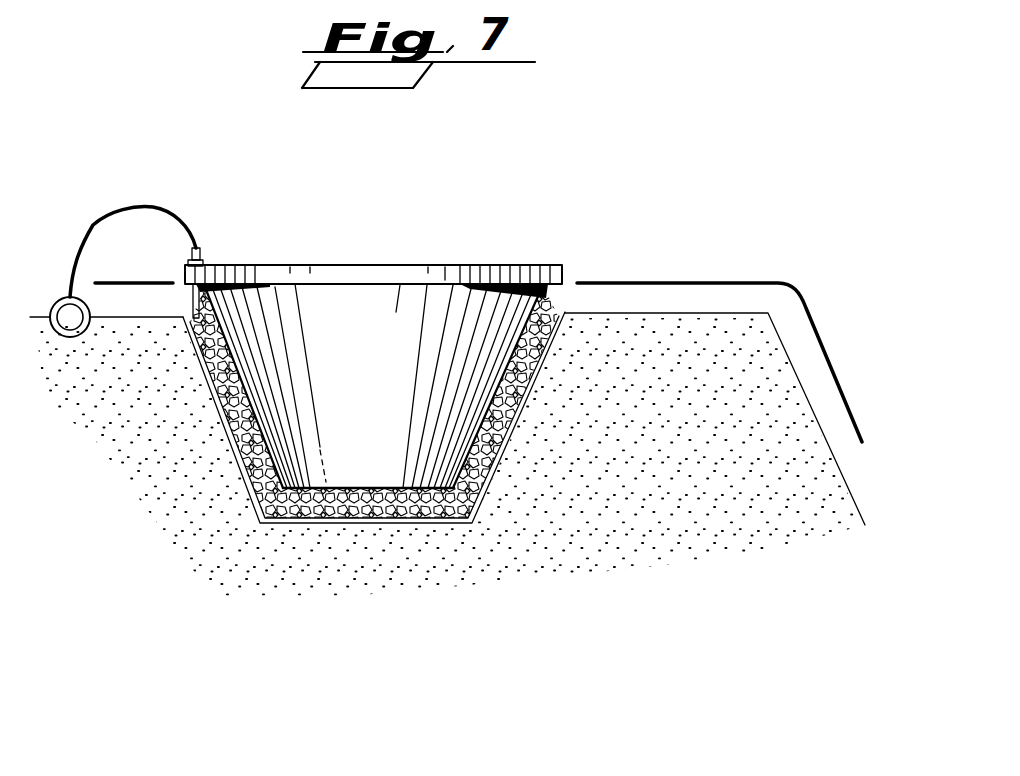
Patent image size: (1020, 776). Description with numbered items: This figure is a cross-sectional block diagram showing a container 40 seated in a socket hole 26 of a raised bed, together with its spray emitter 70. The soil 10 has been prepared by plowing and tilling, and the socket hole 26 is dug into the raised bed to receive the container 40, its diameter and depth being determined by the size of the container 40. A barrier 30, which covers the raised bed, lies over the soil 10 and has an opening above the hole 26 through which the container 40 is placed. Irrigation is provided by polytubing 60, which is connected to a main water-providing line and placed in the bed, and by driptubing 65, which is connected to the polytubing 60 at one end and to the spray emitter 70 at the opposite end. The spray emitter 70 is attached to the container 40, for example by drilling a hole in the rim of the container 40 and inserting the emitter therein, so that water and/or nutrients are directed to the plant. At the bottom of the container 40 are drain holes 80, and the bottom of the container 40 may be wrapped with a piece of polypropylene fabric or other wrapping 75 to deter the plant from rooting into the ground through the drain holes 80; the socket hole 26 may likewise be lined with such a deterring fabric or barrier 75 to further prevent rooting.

The soil 10 is at (165, 418).
The hole 26 is at (240, 473).
The barrier 30 is at (678, 283).
The container 40 is at (372, 295).
The polytubing 60 is at (57, 338).
The driptubing 65 is at (113, 218).
The spray emitter 70 is at (205, 247).
The wrapping 75 is at (485, 470).
The drain holes 80 is at (360, 505).